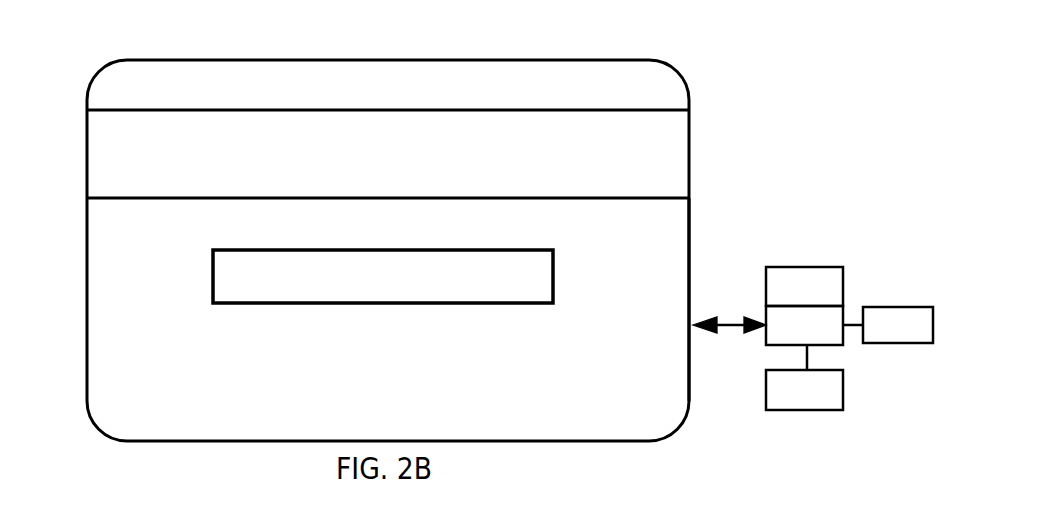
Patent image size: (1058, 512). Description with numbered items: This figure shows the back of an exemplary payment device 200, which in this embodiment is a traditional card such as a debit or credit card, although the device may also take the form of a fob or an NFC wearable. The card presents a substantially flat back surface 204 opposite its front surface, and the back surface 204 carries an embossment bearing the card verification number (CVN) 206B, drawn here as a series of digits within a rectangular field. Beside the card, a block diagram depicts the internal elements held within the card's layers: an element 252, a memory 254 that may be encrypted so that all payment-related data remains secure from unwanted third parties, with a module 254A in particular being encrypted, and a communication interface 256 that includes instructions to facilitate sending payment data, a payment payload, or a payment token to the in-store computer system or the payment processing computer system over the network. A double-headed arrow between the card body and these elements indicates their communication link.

The payment device 200 is at (199, 62).
The back surface 204 is at (669, 240).
The card verification number (CVN) 206B is at (521, 254).
The processor 252 is at (804, 286).
The memory 254 is at (778, 338).
The module 254A is at (898, 325).
The communication interface 256 is at (804, 390).